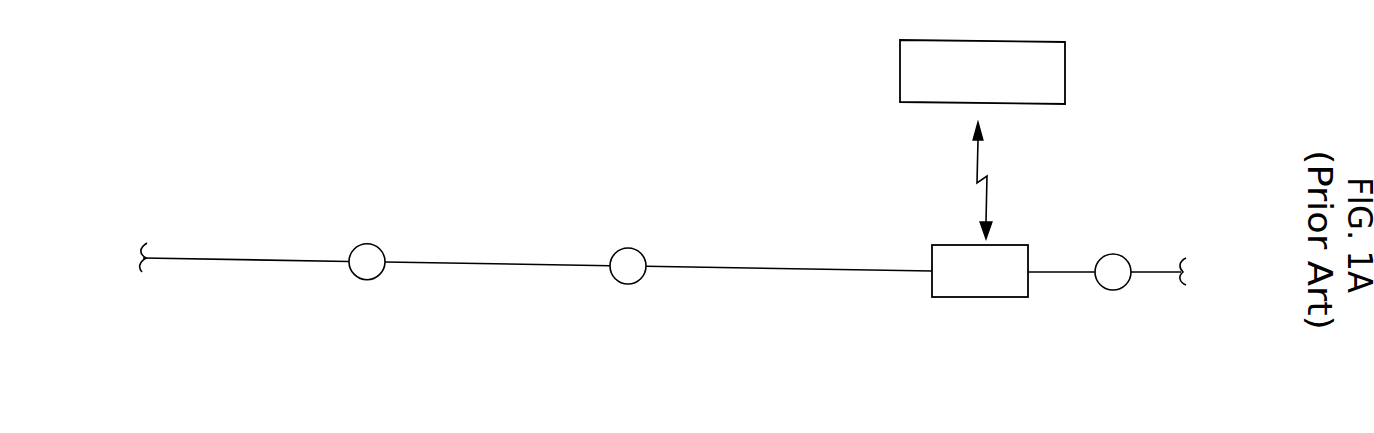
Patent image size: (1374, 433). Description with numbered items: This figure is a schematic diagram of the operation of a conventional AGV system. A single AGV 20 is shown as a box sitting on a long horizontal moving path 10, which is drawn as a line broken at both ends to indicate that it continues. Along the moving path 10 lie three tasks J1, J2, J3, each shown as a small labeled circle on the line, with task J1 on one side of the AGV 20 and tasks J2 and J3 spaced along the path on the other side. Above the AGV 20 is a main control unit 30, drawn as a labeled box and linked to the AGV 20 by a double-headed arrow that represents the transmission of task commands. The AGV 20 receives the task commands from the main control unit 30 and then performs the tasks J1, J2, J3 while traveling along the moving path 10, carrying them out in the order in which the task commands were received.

The moving path 10 is at (789, 268).
The AGV 20 is at (960, 297).
The main control unit 30 is at (900, 81).
The task J1 is at (1113, 272).
The task J2 is at (628, 266).
The task J3 is at (367, 262).